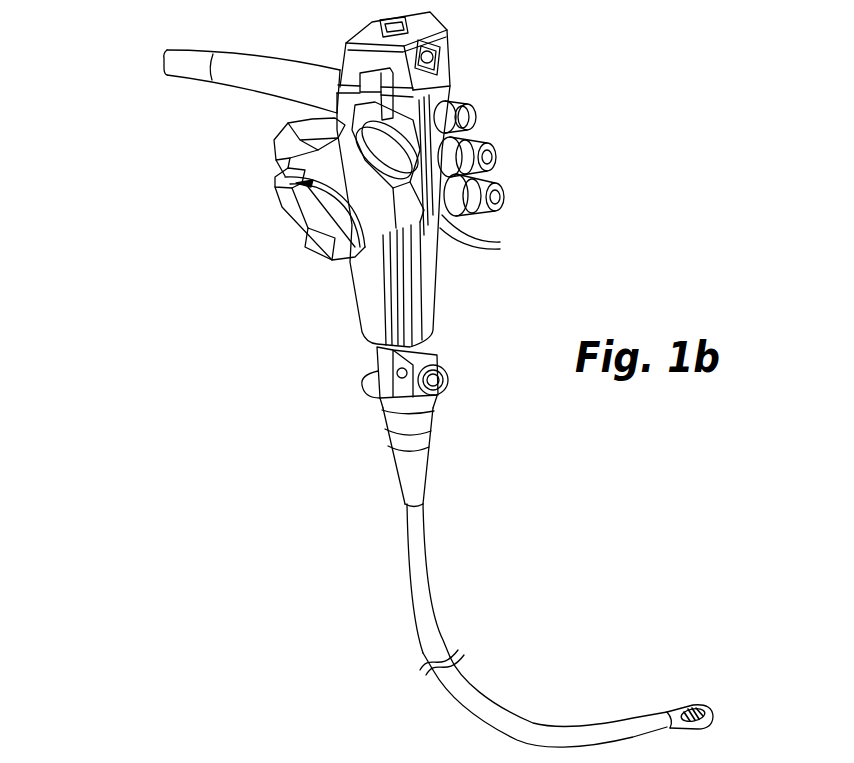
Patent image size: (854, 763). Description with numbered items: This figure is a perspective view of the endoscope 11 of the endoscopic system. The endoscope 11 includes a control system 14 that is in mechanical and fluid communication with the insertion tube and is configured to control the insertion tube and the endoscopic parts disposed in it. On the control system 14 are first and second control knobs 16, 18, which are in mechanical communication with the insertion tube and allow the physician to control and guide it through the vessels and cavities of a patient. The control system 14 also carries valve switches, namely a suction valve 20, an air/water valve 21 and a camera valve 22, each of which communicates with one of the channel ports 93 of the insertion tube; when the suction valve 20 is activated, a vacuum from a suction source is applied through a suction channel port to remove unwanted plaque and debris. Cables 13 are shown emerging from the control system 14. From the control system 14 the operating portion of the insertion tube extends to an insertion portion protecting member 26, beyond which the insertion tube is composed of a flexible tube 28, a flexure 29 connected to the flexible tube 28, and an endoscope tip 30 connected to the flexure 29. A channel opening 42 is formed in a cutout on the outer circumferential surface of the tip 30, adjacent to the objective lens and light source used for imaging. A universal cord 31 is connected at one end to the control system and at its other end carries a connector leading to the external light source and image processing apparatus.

The endoscope 11 is at (143, 162).
The cables 13 is at (482, 235).
The control system 14 is at (462, 80).
The first control knob 16 is at (290, 175).
The second control knob 18 is at (305, 232).
The suction valve 20 is at (496, 154).
The air/water valve 21 is at (506, 194).
The camera valve 22 is at (472, 114).
The insertion portion protecting member 26 is at (405, 477).
The flexible tube 28 is at (408, 523).
The flexure 29 is at (468, 700).
The endoscope tip 30 is at (683, 730).
The universal cord 31 is at (192, 53).
The channel opening 42 is at (687, 705).
The channel ports 93 is at (443, 393).